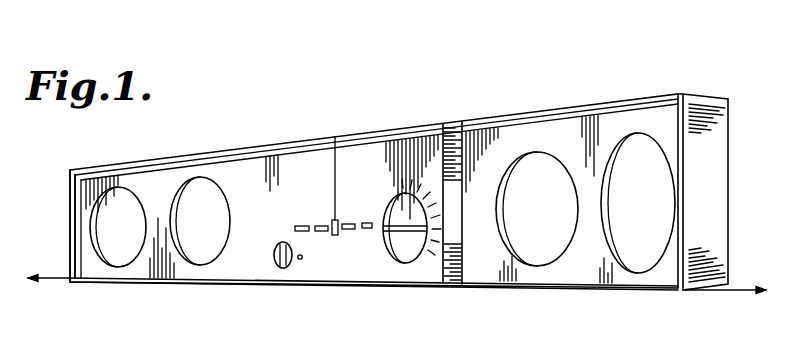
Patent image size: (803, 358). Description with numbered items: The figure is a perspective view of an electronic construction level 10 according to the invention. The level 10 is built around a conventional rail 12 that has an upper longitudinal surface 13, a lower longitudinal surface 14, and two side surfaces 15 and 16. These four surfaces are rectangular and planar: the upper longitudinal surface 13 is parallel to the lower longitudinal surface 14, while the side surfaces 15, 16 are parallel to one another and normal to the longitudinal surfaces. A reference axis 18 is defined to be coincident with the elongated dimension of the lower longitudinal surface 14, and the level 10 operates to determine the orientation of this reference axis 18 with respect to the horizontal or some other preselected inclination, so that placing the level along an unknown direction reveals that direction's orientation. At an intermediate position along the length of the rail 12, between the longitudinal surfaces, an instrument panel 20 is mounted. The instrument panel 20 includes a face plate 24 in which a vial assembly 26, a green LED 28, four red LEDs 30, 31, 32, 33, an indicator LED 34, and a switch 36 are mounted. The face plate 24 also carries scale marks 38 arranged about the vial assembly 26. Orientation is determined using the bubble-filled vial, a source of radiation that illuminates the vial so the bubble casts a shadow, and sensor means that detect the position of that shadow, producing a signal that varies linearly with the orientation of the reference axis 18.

The construction level 10 is at (299, 132).
The rail 12 is at (412, 130).
The upper longitudinal surface 13 is at (600, 99).
The lower longitudinal surface 14 is at (590, 291).
The side surface 15 is at (714, 151).
The side surface 16 is at (68, 243).
The reference axis 18 is at (57, 282).
The instrument panel 20 is at (455, 284).
The face plate 24 is at (347, 157).
The vial assembly 26 is at (411, 259).
The green LED 28 is at (336, 219).
The red LED 30 is at (305, 233).
The red LED 31 is at (322, 233).
The red LED 32 is at (349, 231).
The red LED 33 is at (367, 231).
The indicator LED 34 is at (299, 261).
The switch 36 is at (276, 266).
The scale marks 38 is at (421, 176).